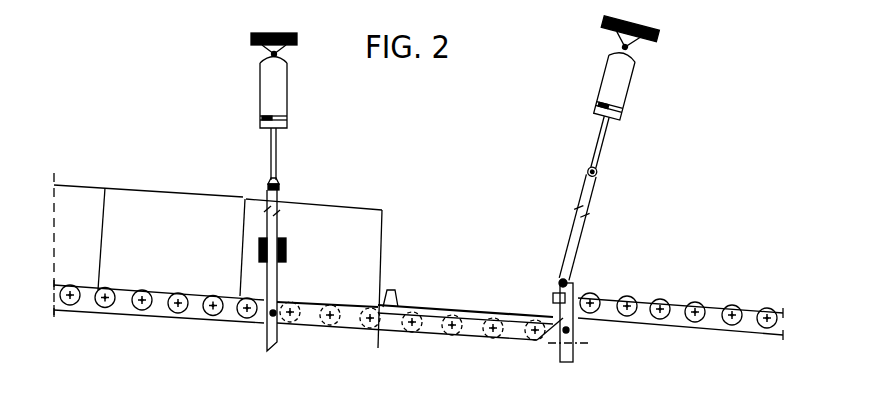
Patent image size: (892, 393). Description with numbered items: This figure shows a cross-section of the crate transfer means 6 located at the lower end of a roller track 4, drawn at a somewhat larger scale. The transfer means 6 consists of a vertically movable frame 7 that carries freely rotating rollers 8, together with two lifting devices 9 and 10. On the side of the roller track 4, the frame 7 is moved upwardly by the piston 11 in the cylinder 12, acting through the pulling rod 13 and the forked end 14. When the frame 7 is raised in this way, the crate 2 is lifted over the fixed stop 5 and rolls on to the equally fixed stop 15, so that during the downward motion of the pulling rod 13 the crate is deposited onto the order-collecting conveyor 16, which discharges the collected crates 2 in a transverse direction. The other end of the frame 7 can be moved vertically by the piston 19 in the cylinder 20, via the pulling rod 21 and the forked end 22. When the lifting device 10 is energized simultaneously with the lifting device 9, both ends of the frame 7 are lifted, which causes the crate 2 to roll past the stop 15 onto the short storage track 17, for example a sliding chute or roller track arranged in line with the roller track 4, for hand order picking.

The crate 2 is at (345, 255).
The roller track 4 is at (192, 310).
The fixed stop 5 is at (391, 290).
The transfer means 6 is at (420, 337).
The frame 7 is at (472, 330).
The rollers 8 is at (422, 327).
The lifting device 9 is at (285, 95).
The lifting device 10 is at (604, 87).
The piston 11 is at (268, 118).
The cylinder 12 is at (278, 72).
The pulling rod 13 is at (272, 151).
The forked end 14 is at (268, 182).
The fixed stop 15 is at (560, 283).
The order-collecting conveyor 16 is at (515, 312).
The storage track 17 is at (747, 327).
The piston 19 is at (610, 110).
The cylinder 20 is at (617, 70).
The pulling rod 21 is at (598, 148).
The forked end 22 is at (596, 172).